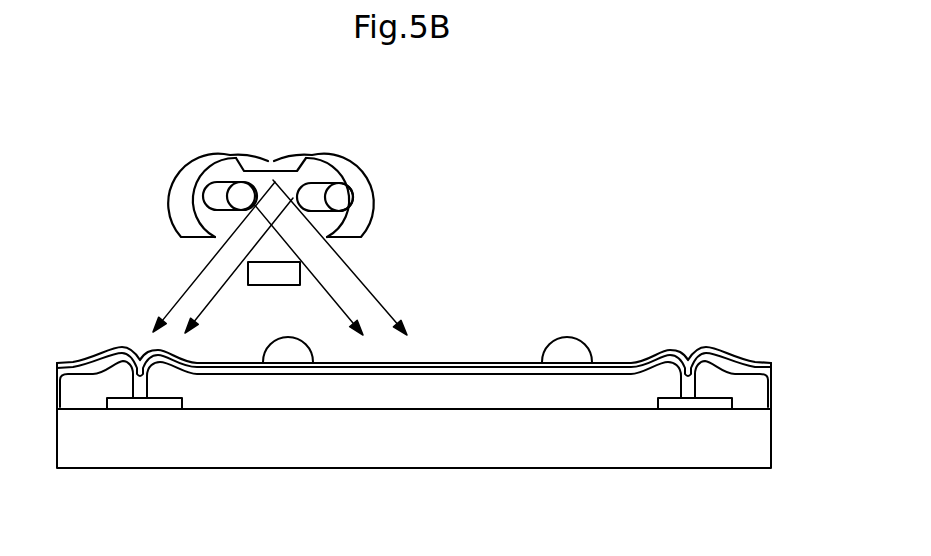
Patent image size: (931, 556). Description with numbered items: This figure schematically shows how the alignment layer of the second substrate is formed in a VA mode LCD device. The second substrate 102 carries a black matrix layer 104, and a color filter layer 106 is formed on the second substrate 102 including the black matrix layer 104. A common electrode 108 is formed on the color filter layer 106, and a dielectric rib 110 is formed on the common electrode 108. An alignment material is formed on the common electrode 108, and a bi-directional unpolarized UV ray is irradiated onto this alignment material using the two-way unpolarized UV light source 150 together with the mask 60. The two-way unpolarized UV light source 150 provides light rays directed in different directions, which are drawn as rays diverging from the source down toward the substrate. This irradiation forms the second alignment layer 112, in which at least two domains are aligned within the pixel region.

The 2-way unpolarized UV light source 150 is at (374, 181).
The mask 60 is at (258, 282).
The second substrate 102 is at (757, 460).
The black matrix layer 104 is at (707, 407).
The color filter layer 106 is at (577, 395).
The common electrode 108 is at (730, 363).
The dielectric rib 110 is at (288, 355).
The second alignment layer 112 is at (118, 347).